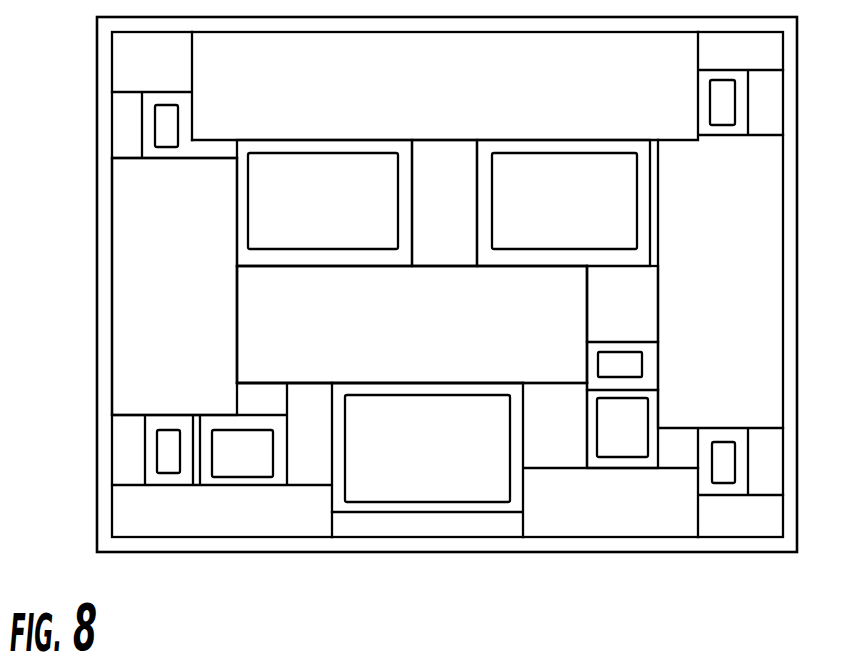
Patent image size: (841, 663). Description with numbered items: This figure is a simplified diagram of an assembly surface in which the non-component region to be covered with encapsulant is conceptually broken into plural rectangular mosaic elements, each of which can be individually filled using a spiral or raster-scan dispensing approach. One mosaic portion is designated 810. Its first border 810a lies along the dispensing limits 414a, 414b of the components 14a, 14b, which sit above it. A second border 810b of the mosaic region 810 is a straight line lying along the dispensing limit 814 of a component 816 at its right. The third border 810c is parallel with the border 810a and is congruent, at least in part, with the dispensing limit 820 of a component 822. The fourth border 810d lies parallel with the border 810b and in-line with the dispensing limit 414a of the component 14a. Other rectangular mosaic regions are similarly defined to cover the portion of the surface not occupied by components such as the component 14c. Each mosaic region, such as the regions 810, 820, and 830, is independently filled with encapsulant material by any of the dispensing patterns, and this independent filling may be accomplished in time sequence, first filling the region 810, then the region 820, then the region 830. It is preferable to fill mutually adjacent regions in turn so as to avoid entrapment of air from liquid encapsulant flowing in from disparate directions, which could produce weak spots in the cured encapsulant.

The component 14a is at (318, 199).
The component 14b is at (552, 199).
The third memory device 14c is at (643, 439).
The dispensing limit 414a is at (410, 232).
The dispensing limit 414b is at (649, 225).
The mosaic region 810 is at (355, 345).
The border 810a is at (452, 267).
The border 810b is at (586, 324).
The border 810c is at (482, 383).
The border 810d is at (282, 304).
The dispensing limit 814 is at (628, 338).
The component 816 is at (630, 363).
The dispensing limit 820 is at (466, 205).
The component 822 is at (250, 405).
The mosaic region 830 is at (445, 483).